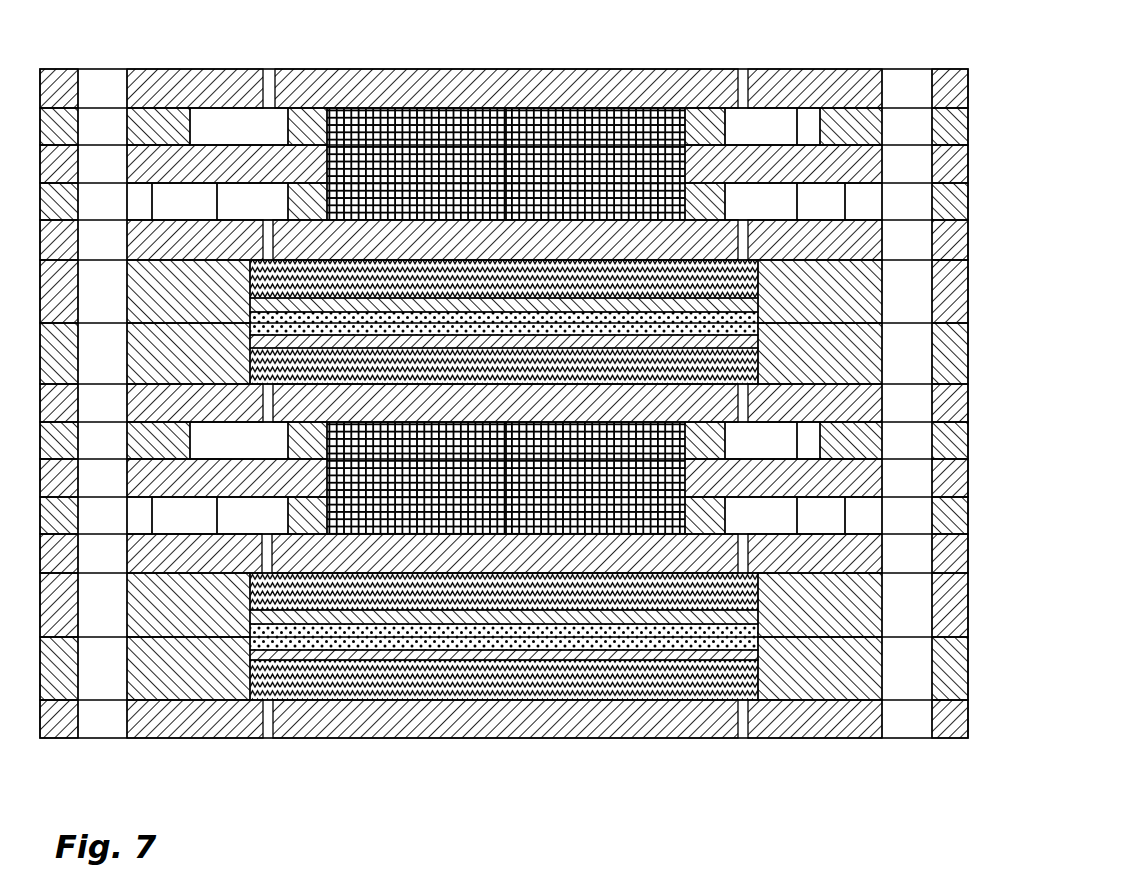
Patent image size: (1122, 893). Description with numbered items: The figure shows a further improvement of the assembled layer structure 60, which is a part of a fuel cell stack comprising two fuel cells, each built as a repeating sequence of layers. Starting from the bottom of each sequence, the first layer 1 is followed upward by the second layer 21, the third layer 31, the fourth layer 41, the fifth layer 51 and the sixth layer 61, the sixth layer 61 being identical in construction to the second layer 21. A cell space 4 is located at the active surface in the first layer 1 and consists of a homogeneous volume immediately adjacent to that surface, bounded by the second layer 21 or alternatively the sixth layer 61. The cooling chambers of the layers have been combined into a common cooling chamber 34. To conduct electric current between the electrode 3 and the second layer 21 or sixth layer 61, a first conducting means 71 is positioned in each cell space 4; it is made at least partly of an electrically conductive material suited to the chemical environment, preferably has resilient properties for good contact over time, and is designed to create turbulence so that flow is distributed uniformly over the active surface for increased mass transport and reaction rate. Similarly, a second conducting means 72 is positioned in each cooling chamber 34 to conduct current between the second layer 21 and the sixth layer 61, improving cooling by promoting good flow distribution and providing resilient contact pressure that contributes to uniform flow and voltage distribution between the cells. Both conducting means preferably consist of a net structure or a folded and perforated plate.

The layer structure 60 is at (967, 765).
The sixth layer 61 is at (968, 83).
The fifth layer 51 is at (968, 121).
The fourth layer 41 is at (968, 158).
The third layer 31 is at (968, 196).
The second layer 21 is at (968, 234).
The first layer 1 is at (661, 560).
The common cooling chamber 34 is at (422, 157).
The second conducting means 72 is at (550, 153).
The electrode 3 is at (397, 623).
The cell space 4 is at (533, 590).
The first conducting means 71 is at (633, 600).